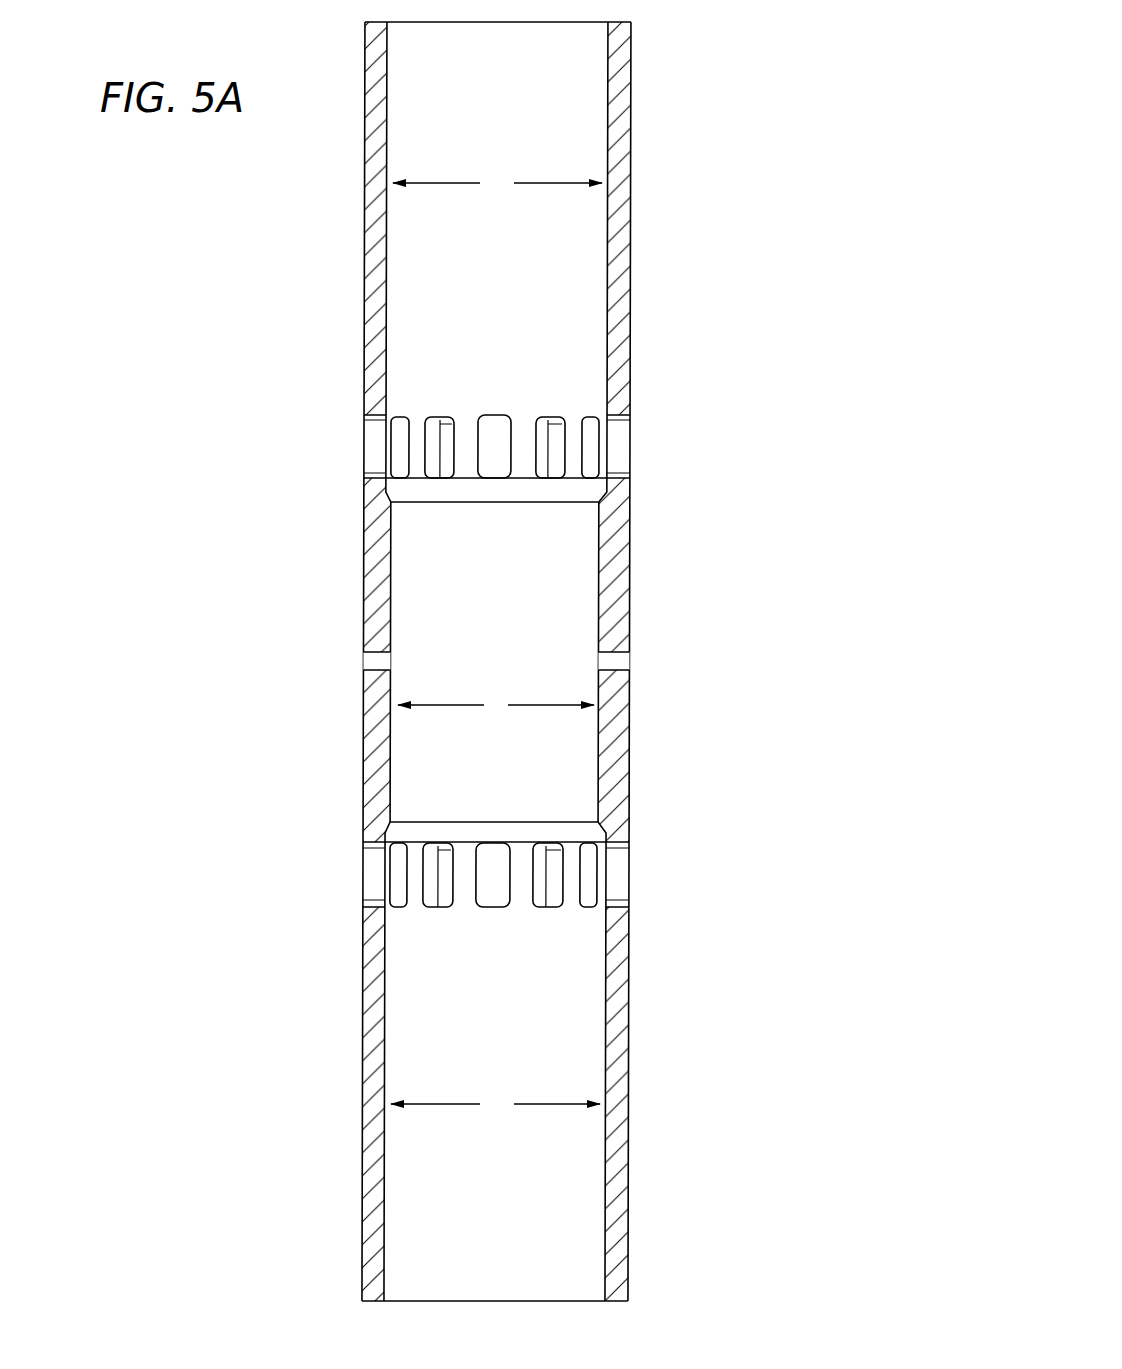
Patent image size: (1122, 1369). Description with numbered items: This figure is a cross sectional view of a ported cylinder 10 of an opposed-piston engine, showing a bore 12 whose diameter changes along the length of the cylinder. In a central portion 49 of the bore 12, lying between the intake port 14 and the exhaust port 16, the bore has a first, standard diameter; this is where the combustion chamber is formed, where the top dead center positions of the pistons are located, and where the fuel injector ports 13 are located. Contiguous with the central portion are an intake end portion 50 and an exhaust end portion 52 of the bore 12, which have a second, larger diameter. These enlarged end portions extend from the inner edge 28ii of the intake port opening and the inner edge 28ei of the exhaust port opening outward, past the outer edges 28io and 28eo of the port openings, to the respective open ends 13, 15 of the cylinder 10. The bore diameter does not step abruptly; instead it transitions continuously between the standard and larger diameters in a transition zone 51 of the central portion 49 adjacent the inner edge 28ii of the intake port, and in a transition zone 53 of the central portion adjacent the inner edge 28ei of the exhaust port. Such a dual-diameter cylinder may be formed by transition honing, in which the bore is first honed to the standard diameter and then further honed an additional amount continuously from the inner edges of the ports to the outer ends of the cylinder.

The cylinder 10 is at (631, 135).
The bore 12 is at (513, 111).
The fuel injector ports 13 is at (650, 19).
The intake port 14 is at (648, 436).
The open end 15 is at (655, 1289).
The exhaust port 16 is at (648, 871).
The outer edge of intake port opening 28io is at (590, 415).
The inner edge of intake port opening 28ii is at (588, 478).
The inner edge of exhaust port opening 28ei is at (587, 845).
The outer edge of exhaust port opening 28eo is at (590, 907).
The central portion 49 is at (300, 503).
The intake end portion 50 is at (300, 17).
The transition zone 51 is at (290, 487).
The exhaust end portion 52 is at (300, 848).
The transition zone 53 is at (290, 842).